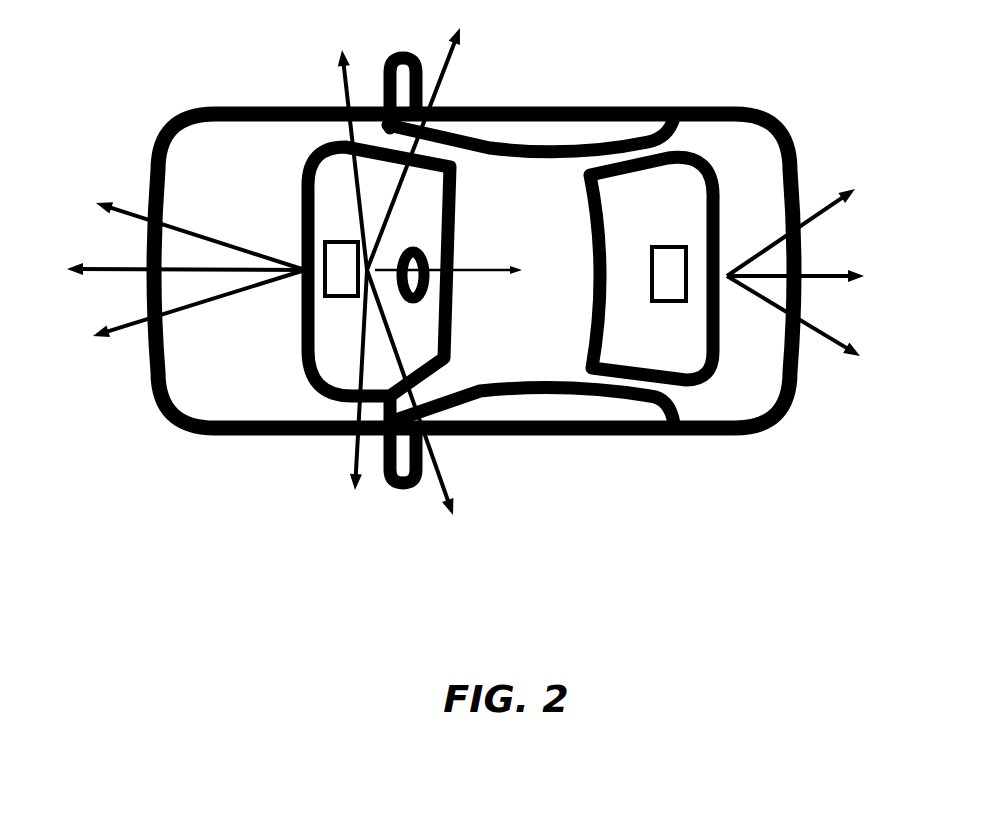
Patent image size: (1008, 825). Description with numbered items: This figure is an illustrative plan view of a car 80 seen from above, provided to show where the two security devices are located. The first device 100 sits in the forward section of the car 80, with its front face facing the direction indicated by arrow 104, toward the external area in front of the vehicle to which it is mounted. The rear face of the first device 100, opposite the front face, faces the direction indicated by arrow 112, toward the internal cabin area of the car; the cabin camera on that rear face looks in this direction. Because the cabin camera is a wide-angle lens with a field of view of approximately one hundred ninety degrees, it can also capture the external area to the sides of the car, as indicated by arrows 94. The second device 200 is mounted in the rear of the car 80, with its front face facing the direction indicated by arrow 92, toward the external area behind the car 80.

The car 80 is at (203, 433).
The arrow 92 is at (803, 277).
The arrows 94 is at (409, 280).
The first device 100 is at (343, 243).
The arrow 104 is at (174, 269).
The arrow 112 is at (450, 269).
The second device 200 is at (667, 233).